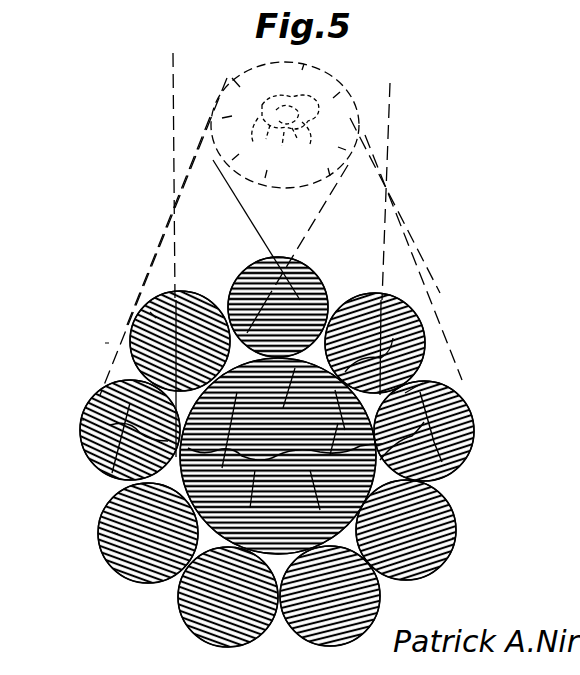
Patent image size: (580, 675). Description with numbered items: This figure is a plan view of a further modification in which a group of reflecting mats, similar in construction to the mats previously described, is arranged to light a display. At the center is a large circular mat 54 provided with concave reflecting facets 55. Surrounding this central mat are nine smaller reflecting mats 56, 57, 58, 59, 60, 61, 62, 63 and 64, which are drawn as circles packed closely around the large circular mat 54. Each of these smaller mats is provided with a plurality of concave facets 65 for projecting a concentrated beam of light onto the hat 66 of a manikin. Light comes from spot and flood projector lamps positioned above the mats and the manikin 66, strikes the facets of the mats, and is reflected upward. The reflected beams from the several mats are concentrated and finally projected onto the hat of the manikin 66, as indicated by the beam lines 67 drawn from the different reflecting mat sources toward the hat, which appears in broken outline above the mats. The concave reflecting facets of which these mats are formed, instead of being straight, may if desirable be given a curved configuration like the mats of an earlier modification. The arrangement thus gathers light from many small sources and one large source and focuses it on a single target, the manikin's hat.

The large circular mat 54 is at (134, 458).
The concave reflecting facets 55 is at (425, 373).
The smaller reflecting mat 56 is at (317, 274).
The smaller reflecting mat 57 is at (408, 294).
The smaller reflecting mat 58 is at (473, 419).
The smaller reflecting mat 59 is at (455, 512).
The smaller reflecting mat 60 is at (298, 637).
The smaller reflecting mat 61 is at (180, 617).
The smaller reflecting mat 62 is at (110, 567).
The smaller reflecting mat 63 is at (78, 442).
The smaller reflecting mat 64 is at (132, 327).
The concave facets 65 is at (150, 312).
The hat of a manikin 66 is at (341, 83).
The beam lines 67 is at (107, 344).